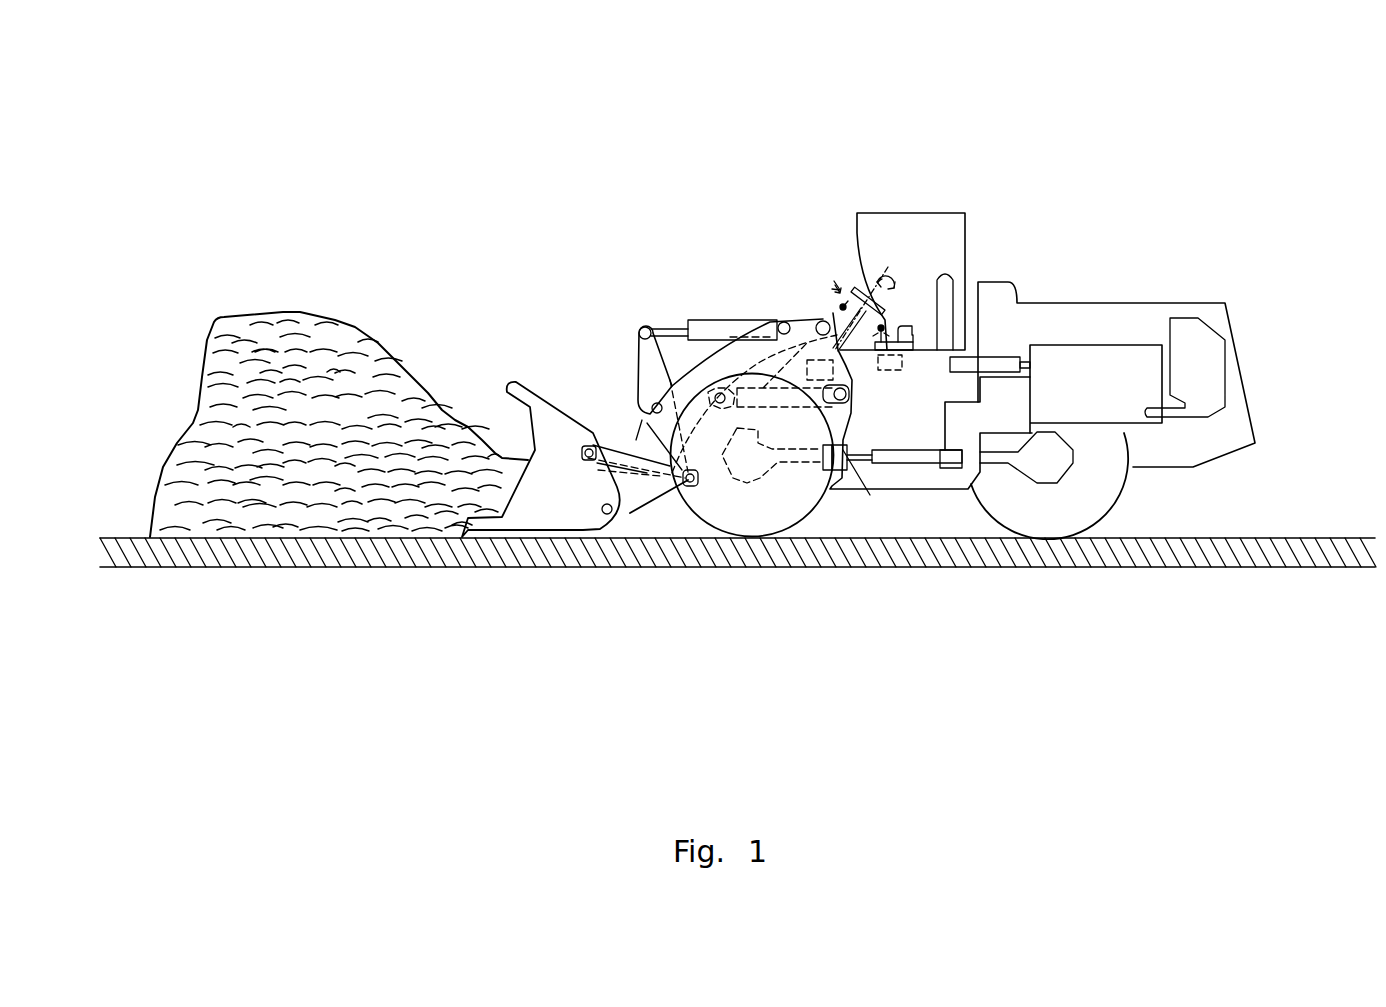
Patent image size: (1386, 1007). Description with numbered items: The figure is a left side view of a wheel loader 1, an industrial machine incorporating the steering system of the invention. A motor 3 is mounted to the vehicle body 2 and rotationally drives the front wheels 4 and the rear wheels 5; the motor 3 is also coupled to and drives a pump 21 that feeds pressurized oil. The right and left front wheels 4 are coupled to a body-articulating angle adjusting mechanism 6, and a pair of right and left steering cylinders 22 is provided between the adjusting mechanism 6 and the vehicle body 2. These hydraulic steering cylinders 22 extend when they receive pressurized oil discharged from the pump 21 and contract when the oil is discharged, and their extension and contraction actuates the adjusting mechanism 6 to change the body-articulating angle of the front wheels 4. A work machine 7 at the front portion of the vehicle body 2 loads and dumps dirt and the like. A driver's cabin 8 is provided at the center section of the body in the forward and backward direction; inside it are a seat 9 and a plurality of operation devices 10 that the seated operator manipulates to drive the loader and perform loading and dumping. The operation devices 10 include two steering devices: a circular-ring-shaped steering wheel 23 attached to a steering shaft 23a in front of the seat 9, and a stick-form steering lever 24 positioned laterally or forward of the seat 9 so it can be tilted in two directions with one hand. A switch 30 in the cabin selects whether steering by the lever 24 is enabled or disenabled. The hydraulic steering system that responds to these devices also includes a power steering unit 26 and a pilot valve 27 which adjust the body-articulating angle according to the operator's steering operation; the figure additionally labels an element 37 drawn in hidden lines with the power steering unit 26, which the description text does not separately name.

The wheel loader 1 is at (1200, 147).
The vehicle body 2 is at (1097, 315).
The motor 3 is at (1115, 353).
The front wheels 4 is at (710, 500).
The rear wheels 5 is at (1080, 517).
The body-articulating angle adjusting mechanism 6 is at (865, 480).
The work machine 7 is at (544, 398).
The driver's cabin 8 is at (938, 212).
The seat 9 is at (950, 272).
The operation devices 10 is at (840, 290).
The pump 21 is at (982, 357).
The steering cylinders 22 is at (917, 458).
The steering wheel 23 is at (830, 232).
The steering shaft 23a is at (838, 300).
The steering lever 24 is at (900, 325).
The power steering unit 26 is at (815, 358).
The pilot valve 27 is at (890, 372).
The switch 30 is at (908, 327).
The steering cylinder 37 is at (778, 261).